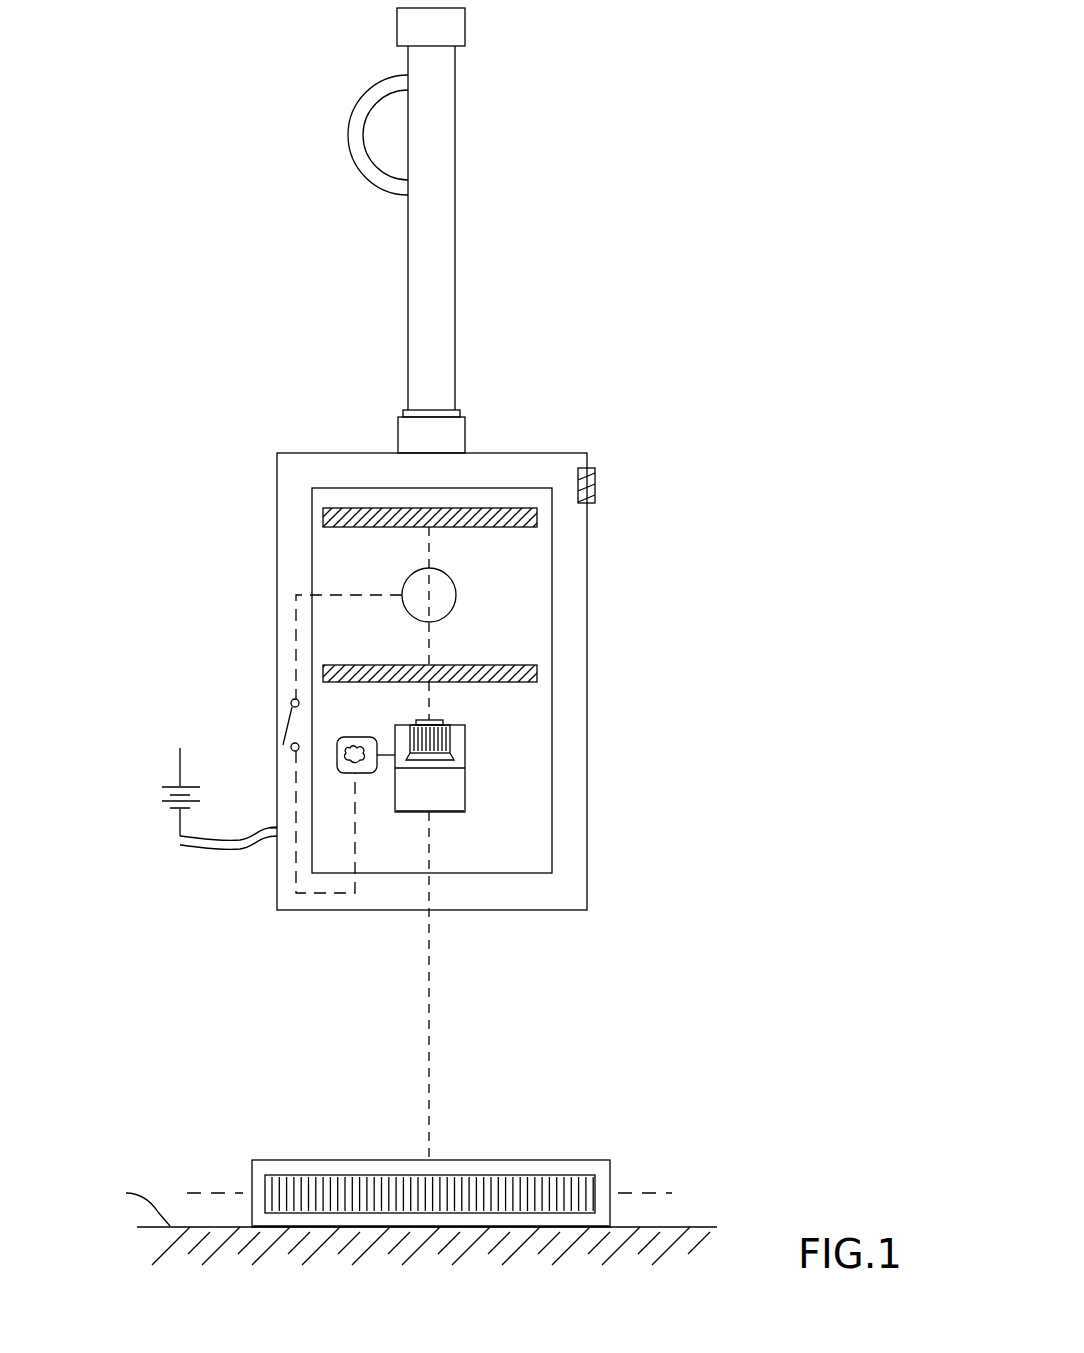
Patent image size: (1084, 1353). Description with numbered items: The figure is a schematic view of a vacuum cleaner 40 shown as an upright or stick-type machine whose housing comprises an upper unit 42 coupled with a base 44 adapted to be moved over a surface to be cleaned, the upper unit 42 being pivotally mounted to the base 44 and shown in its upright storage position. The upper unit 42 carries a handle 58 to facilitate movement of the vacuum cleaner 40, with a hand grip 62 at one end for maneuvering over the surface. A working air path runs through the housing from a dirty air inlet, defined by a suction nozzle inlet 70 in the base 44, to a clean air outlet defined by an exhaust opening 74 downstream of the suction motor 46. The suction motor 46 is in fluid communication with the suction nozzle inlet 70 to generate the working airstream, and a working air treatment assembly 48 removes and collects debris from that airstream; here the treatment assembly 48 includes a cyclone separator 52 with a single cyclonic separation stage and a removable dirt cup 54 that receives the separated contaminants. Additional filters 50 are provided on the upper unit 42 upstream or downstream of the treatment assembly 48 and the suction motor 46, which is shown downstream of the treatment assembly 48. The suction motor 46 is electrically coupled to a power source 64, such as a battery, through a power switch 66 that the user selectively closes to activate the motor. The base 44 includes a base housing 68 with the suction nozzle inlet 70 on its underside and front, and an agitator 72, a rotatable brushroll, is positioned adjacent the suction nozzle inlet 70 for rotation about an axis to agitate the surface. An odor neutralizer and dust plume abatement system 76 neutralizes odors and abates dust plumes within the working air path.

The vacuum cleaner 40 is at (170, 116).
The upper unit 42 is at (270, 539).
The base 44 is at (401, 1201).
The suction motor 46 is at (445, 574).
The working air treatment assembly 48 is at (514, 764).
The filters 50 is at (332, 513).
The cyclone separator 52 is at (467, 740).
The dirt cup 54 is at (467, 800).
The handle 58 is at (460, 206).
The hand grip 62 is at (374, 96).
The power source 64 is at (180, 766).
The power switch 66 is at (283, 735).
The base housing 68 is at (316, 1160).
The suction nozzle inlet 70 is at (445, 1222).
The agitator 72 is at (557, 1173).
The exhaust opening 74 is at (598, 474).
The odor neutralizer and dust plume abatement system 76 is at (337, 770).